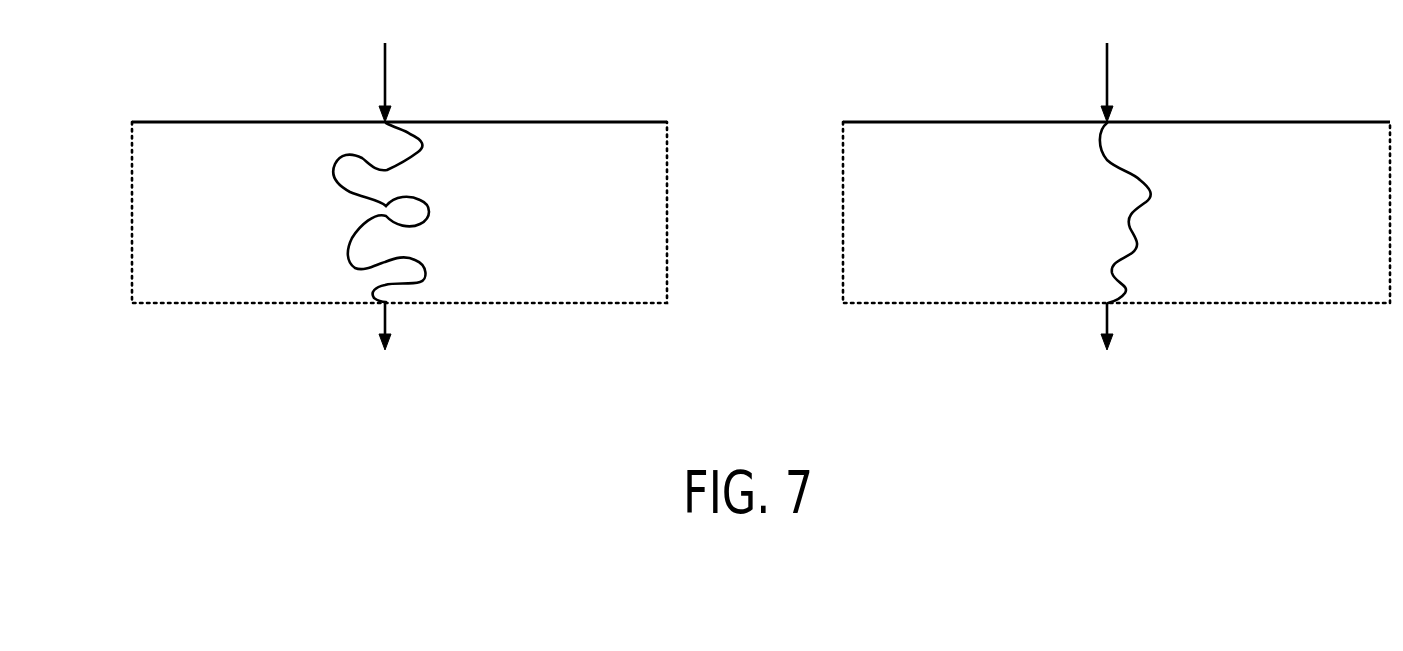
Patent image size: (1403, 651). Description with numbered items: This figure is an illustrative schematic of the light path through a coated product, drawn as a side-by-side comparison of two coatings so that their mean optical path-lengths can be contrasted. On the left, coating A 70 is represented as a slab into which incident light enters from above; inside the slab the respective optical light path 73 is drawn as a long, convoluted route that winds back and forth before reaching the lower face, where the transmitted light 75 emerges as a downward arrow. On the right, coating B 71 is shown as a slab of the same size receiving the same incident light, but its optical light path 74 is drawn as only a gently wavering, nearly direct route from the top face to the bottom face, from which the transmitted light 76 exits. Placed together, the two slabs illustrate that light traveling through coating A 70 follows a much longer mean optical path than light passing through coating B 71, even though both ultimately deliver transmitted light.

The coating A 70 is at (215, 122).
The coating B 71 is at (938, 122).
The optical light path 73 is at (452, 210).
The optical light path 74 is at (1110, 210).
The transmitted light 75 is at (411, 330).
The transmitted light 76 is at (1133, 330).